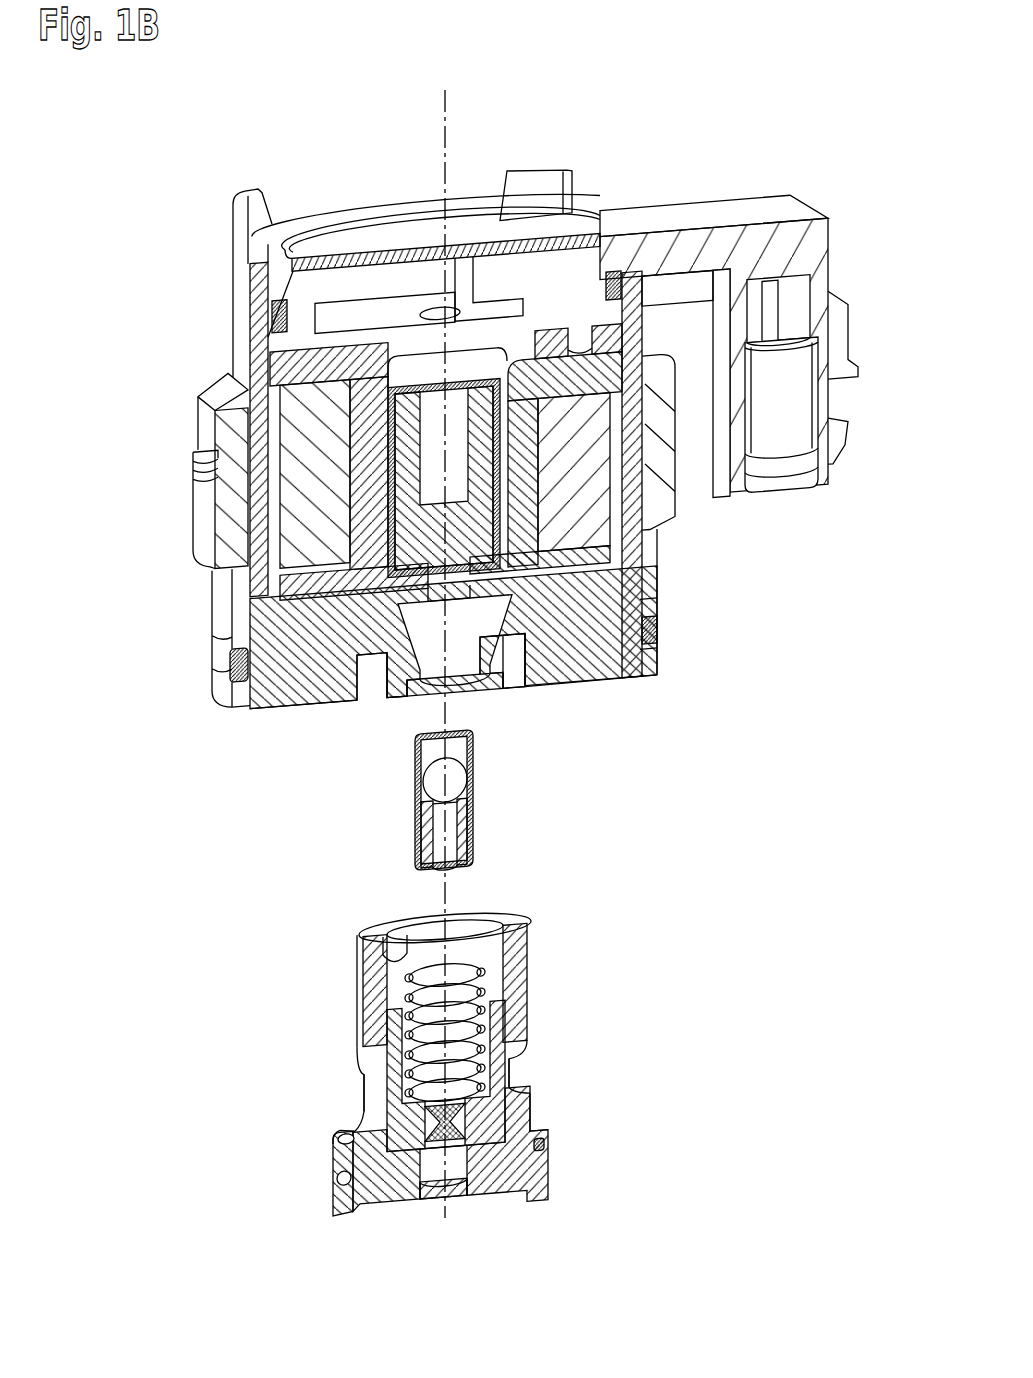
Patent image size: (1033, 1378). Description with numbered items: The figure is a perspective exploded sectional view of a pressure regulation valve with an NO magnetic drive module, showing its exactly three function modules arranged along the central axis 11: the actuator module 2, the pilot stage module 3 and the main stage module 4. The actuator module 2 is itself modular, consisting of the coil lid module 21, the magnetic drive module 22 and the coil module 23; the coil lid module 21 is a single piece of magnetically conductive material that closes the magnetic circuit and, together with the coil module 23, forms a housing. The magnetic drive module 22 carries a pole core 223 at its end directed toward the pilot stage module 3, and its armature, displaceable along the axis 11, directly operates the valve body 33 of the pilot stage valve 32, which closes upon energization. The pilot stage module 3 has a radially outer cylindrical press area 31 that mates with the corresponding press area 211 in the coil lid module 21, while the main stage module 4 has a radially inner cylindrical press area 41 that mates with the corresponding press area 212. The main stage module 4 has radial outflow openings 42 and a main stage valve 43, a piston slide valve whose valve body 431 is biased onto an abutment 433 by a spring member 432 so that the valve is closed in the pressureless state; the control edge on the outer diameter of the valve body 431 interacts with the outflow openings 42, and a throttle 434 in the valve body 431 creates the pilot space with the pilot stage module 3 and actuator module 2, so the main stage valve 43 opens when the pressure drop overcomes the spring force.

The central axis 11 is at (447, 130).
The actuator module 2 is at (495, 426).
The coil lid module 21 is at (610, 590).
The press area 211 is at (394, 699).
The press area 212 is at (507, 660).
The magnetic drive module 22 is at (413, 418).
The pole core 223 is at (644, 611).
The coil module 23 is at (632, 492).
The pilot stage module 3 is at (419, 801).
The pilot stage valve 32 is at (390, 792).
The press area 31 is at (473, 840).
The valve body 33 is at (456, 778).
The main stage module 4 is at (575, 1000).
The press area 41 is at (395, 920).
The radial outflow openings 42 is at (512, 1070).
The main stage valve 43 is at (377, 1078).
The valve body 431 is at (402, 1120).
The spring member 432 is at (373, 985).
The abutment 433 is at (520, 1140).
The throttle 434 is at (337, 1165).